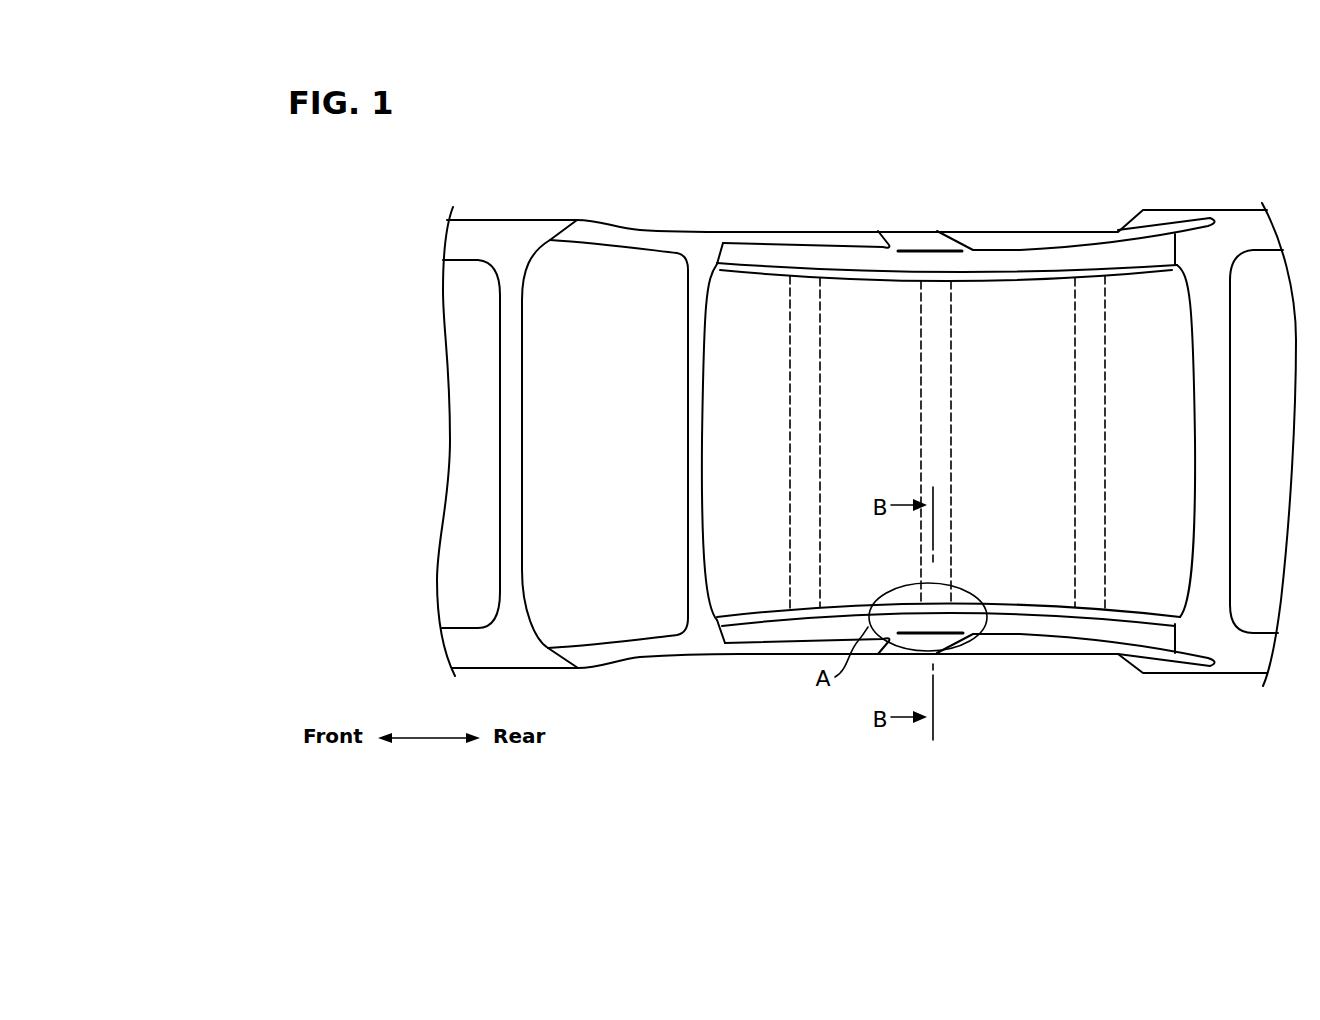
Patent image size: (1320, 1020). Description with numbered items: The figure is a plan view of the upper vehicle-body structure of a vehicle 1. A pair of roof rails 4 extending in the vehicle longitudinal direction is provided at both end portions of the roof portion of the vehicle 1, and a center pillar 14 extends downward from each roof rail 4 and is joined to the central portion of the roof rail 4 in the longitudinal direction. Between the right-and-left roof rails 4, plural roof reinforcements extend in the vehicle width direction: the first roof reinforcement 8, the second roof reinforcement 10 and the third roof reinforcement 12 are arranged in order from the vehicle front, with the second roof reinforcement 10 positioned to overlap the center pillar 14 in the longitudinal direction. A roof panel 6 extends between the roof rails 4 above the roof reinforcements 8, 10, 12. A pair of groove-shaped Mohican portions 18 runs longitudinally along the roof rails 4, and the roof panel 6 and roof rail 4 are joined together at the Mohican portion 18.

The vehicle 1 is at (530, 188).
The roof rail 4 is at (1032, 255).
The roof panel 6 is at (1000, 472).
The first roof reinforcement 8 is at (810, 392).
The second roof reinforcement 10 is at (940, 392).
The third roof reinforcement 12 is at (1090, 392).
The center pillar 14 is at (923, 236).
The Mohican portion 18 is at (872, 282).